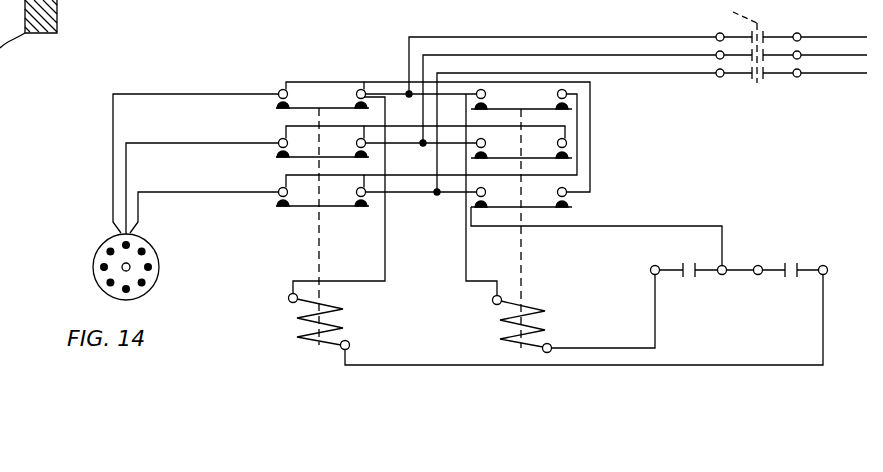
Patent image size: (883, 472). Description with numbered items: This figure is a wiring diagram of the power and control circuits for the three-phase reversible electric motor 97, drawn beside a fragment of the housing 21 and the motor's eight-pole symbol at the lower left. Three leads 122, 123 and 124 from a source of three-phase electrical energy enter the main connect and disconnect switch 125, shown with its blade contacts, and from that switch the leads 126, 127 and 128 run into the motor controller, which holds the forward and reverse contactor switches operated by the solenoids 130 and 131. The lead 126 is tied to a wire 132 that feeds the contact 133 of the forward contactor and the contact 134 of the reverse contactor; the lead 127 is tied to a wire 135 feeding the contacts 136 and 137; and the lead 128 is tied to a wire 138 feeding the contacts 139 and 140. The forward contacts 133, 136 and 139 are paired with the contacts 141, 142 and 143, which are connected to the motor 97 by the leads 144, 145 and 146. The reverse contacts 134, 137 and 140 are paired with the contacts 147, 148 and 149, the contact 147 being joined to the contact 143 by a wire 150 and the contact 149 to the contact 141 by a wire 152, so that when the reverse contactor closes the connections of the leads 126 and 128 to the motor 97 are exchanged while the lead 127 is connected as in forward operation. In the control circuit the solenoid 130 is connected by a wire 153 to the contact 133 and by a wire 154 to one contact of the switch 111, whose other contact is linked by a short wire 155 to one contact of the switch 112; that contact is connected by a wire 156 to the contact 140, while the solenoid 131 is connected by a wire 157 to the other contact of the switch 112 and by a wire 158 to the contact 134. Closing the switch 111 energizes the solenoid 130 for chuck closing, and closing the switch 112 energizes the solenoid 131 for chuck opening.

The housing wall 21 is at (45, 34).
The electric motor 97 is at (160, 263).
The switch 111 is at (797, 264).
The switch 112 is at (683, 263).
The lead 122 is at (820, 35).
The lead 123 is at (813, 55).
The lead 124 is at (818, 77).
The main connect and disconnect switch 125 is at (762, 24).
The lead 126 is at (607, 35).
The lead 127 is at (643, 53).
The lead 128 is at (650, 75).
The solenoid 130 is at (348, 309).
The solenoid 131 is at (553, 300).
The wire 132 is at (410, 97).
The contact of the forward contactor switch 133 is at (362, 82).
The contact of the reverse contactor switch 134 is at (485, 93).
The wire 135 is at (393, 146).
The contact of the forward contactor switch 136 is at (361, 139).
The contact of the reverse contactor switch 137 is at (488, 134).
The wire 138 is at (403, 196).
The contact of the forward contactor switch 139 is at (361, 188).
The contact of the reverse contactor switch 140 is at (490, 183).
The contact of the forward contactor switch 141 is at (281, 89).
The contact of the forward contactor switch 142 is at (281, 139).
The contact of the forward contactor switch 143 is at (281, 188).
The lead 144 is at (143, 93).
The lead 145 is at (158, 141).
The lead 146 is at (167, 192).
The contact of the reverse contactor switch 147 is at (567, 93).
The contact of the reverse contactor switch 148 is at (567, 142).
The contact of the reverse contactor switch 149 is at (567, 191).
The wire 150 is at (590, 113).
The wire 152 is at (590, 163).
The wire 153 is at (385, 245).
The wire 154 is at (467, 365).
The short wire 155 is at (743, 268).
The wire 156 is at (663, 227).
The wire 157 is at (603, 347).
The wire 158 is at (465, 279).